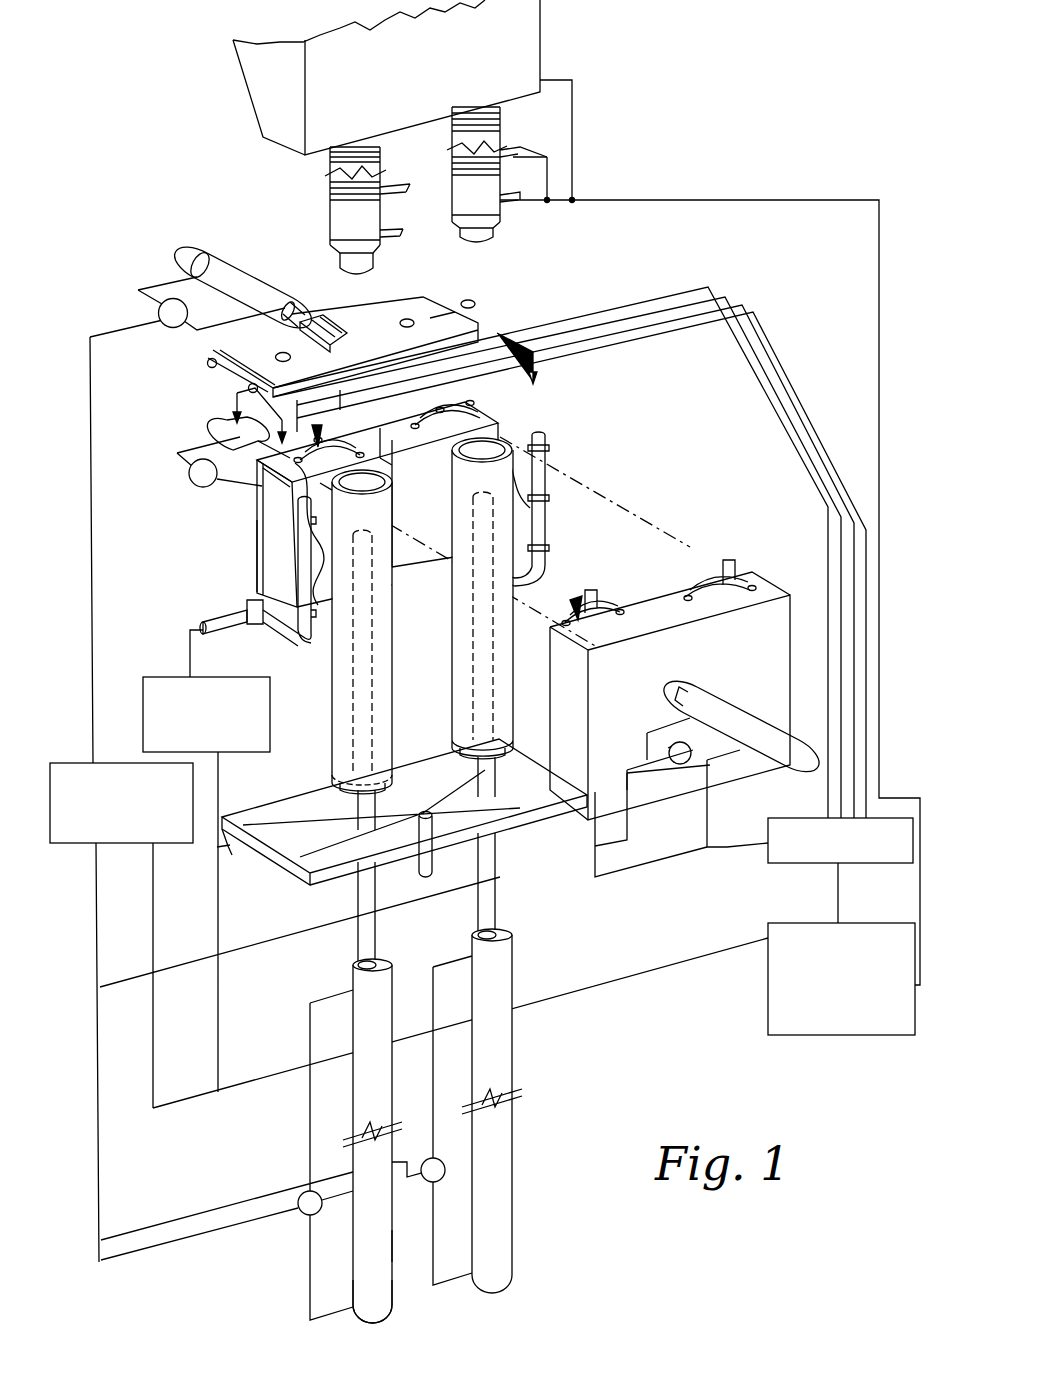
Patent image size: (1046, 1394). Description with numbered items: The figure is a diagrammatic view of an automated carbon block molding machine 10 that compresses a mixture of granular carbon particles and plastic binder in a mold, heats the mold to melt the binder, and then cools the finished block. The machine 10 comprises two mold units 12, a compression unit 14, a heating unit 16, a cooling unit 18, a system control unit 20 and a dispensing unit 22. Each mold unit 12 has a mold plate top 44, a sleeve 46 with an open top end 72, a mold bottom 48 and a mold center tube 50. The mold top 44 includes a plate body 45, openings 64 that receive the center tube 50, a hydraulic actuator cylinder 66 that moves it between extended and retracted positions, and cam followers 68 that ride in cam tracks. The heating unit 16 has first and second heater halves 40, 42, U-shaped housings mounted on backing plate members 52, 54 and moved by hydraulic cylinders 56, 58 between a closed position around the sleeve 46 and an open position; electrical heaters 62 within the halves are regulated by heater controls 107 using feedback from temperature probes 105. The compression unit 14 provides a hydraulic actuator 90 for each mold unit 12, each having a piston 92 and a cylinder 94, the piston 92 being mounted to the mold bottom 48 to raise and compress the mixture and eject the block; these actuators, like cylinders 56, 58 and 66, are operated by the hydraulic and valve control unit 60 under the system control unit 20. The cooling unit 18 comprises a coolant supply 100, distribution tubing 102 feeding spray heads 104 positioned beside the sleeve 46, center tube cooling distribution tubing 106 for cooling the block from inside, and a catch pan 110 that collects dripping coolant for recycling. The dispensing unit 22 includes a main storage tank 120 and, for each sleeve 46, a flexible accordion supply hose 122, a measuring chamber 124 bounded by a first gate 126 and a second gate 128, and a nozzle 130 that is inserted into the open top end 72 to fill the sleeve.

The automated carbon block molding machine 10 is at (628, 150).
The mold unit 12 is at (525, 610).
The compression unit 14 is at (518, 1232).
The heating unit 16 is at (655, 790).
The cooling unit 18 is at (560, 493).
The system control unit 20 is at (841, 979).
The dispensing unit 22 is at (545, 66).
The first heater half 40 is at (682, 686).
The second heater half 42 is at (478, 408).
The mold plate top 44 is at (388, 307).
The plate body 45 is at (336, 328).
The sleeve 46 is at (332, 698).
The mold bottom 48 is at (338, 757).
The mold center tube 50 is at (350, 670).
The backing plate member 52 is at (689, 707).
The backing plate member 54 is at (258, 497).
The hydraulic cylinder 56 is at (790, 758).
The hydraulic cylinder 58 is at (233, 430).
The hydraulic and valve control unit 60 is at (127, 850).
The electrical heaters 62 is at (610, 615).
The openings 64 is at (276, 355).
The hydraulic actuator cylinder 66 is at (208, 258).
The cam followers 68 is at (470, 302).
The open top end 72 is at (290, 500).
The hydraulic actuator 90 is at (390, 1299).
The piston 92 is at (358, 946).
The cylinder 94 is at (393, 1263).
The coolant supply 100 is at (217, 675).
The distribution tubing 102 is at (213, 613).
The spray heads 104 is at (297, 547).
The temperature probes 105 is at (678, 855).
The center tube cooling distribution tubing 106 is at (227, 860).
The heater controls 107 is at (789, 864).
The catch pan 110 is at (537, 812).
The main storage tank 120 is at (262, 92).
The supply hose 122 is at (328, 166).
The measuring chamber 124 is at (329, 209).
The first gate 126 is at (398, 193).
The second gate 128 is at (400, 233).
The nozzle 130 is at (340, 265).